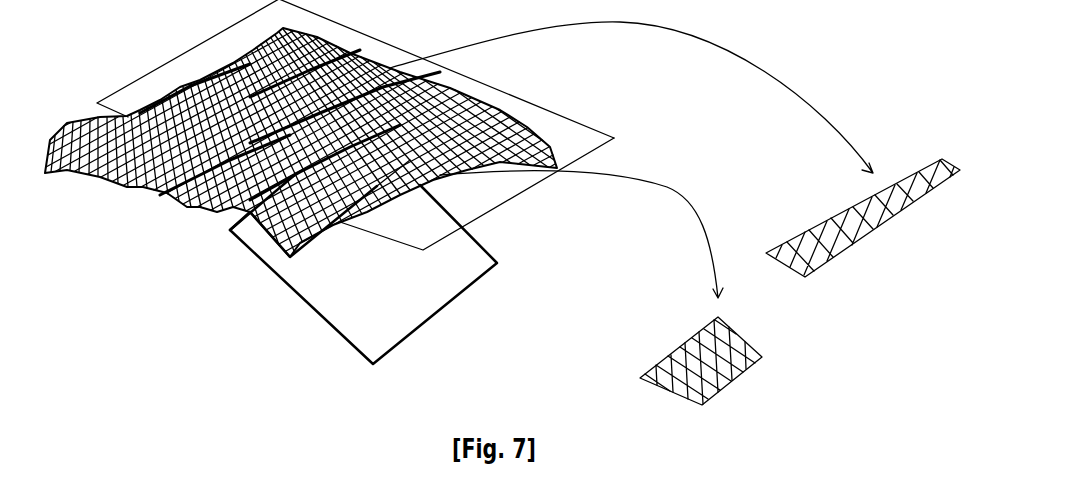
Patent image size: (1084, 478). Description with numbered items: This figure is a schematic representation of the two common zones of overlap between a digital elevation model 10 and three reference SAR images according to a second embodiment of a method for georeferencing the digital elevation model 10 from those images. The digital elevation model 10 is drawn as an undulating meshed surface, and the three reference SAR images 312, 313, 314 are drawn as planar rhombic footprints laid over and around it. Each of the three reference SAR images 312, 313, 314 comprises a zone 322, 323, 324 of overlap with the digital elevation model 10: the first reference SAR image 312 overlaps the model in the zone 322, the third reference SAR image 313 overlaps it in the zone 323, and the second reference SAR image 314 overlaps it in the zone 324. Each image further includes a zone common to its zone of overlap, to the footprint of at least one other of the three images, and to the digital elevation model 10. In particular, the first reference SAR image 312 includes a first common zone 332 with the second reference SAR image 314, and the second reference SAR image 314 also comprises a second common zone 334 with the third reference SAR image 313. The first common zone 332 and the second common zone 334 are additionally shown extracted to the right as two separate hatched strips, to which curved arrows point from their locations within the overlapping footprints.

The digital elevation model 10 is at (97, 191).
The first reference SAR image 312 is at (329, 11).
The third reference SAR image 313 is at (508, 253).
The second reference SAR image 314 is at (622, 132).
The zone of overlap 322 is at (363, 51).
The zone of overlap 323 is at (260, 244).
The zone of overlap 324 is at (512, 96).
The first common zone 332 is at (181, 192).
The second common zone 334 is at (333, 223).